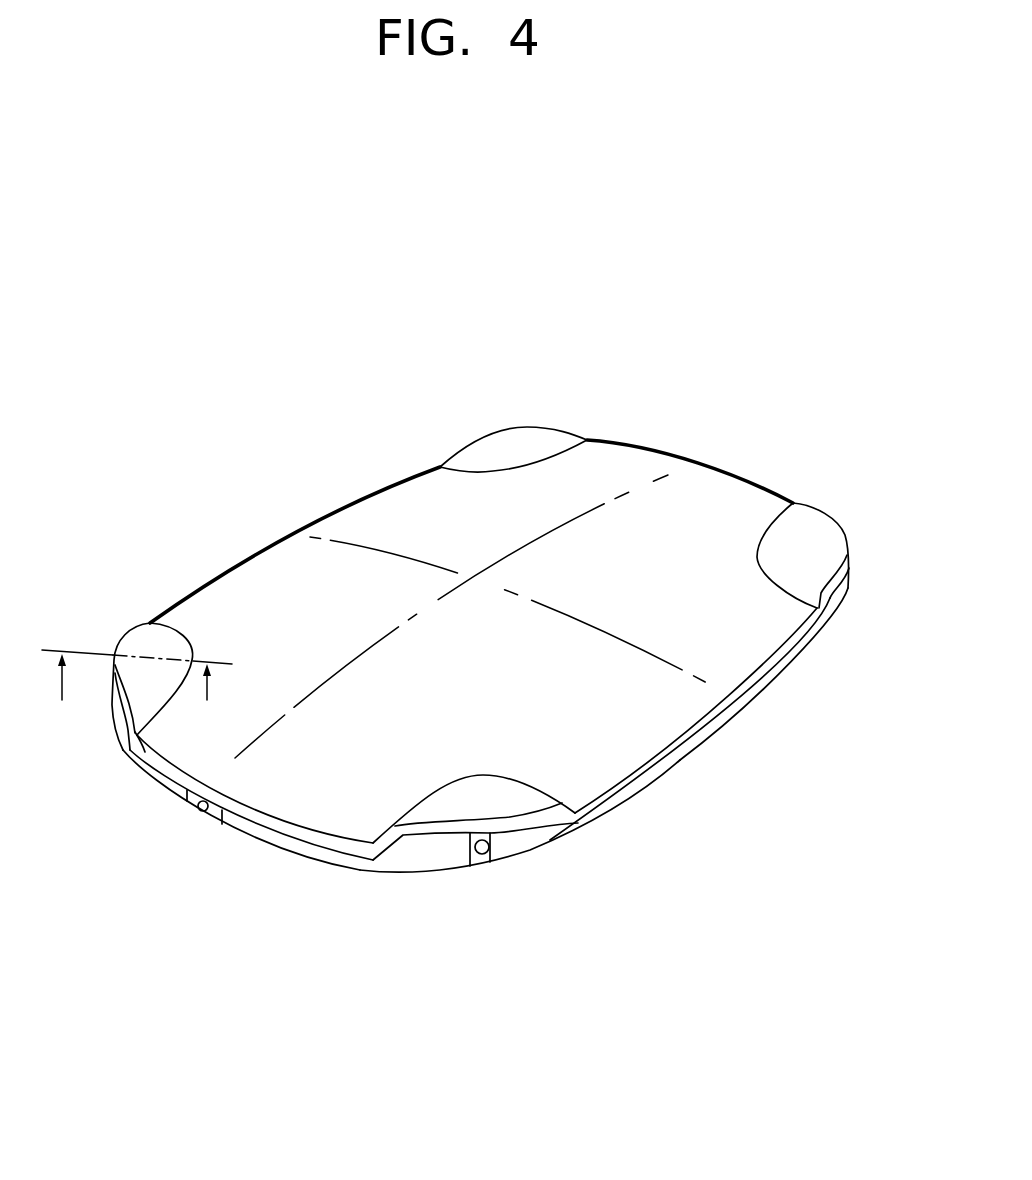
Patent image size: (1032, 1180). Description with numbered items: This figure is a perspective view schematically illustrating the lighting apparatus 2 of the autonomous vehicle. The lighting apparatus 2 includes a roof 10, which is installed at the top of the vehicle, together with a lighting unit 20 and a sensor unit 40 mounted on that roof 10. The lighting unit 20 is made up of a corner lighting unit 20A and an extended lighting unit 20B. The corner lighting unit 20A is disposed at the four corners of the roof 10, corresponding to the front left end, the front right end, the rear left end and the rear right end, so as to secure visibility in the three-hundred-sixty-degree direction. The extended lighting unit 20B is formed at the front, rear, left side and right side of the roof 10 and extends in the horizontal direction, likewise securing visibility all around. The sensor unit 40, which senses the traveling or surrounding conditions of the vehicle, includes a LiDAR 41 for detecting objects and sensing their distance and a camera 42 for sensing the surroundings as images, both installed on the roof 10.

The lighting apparatus 2 is at (838, 480).
The roof 10 is at (410, 517).
The lighting unit 20 is at (572, 856).
The corner lighting unit 20A is at (543, 427).
The extended lighting unit 20B is at (258, 547).
The sensor unit 40 is at (338, 828).
The LiDAR 41 is at (483, 856).
The camera 42 is at (198, 810).